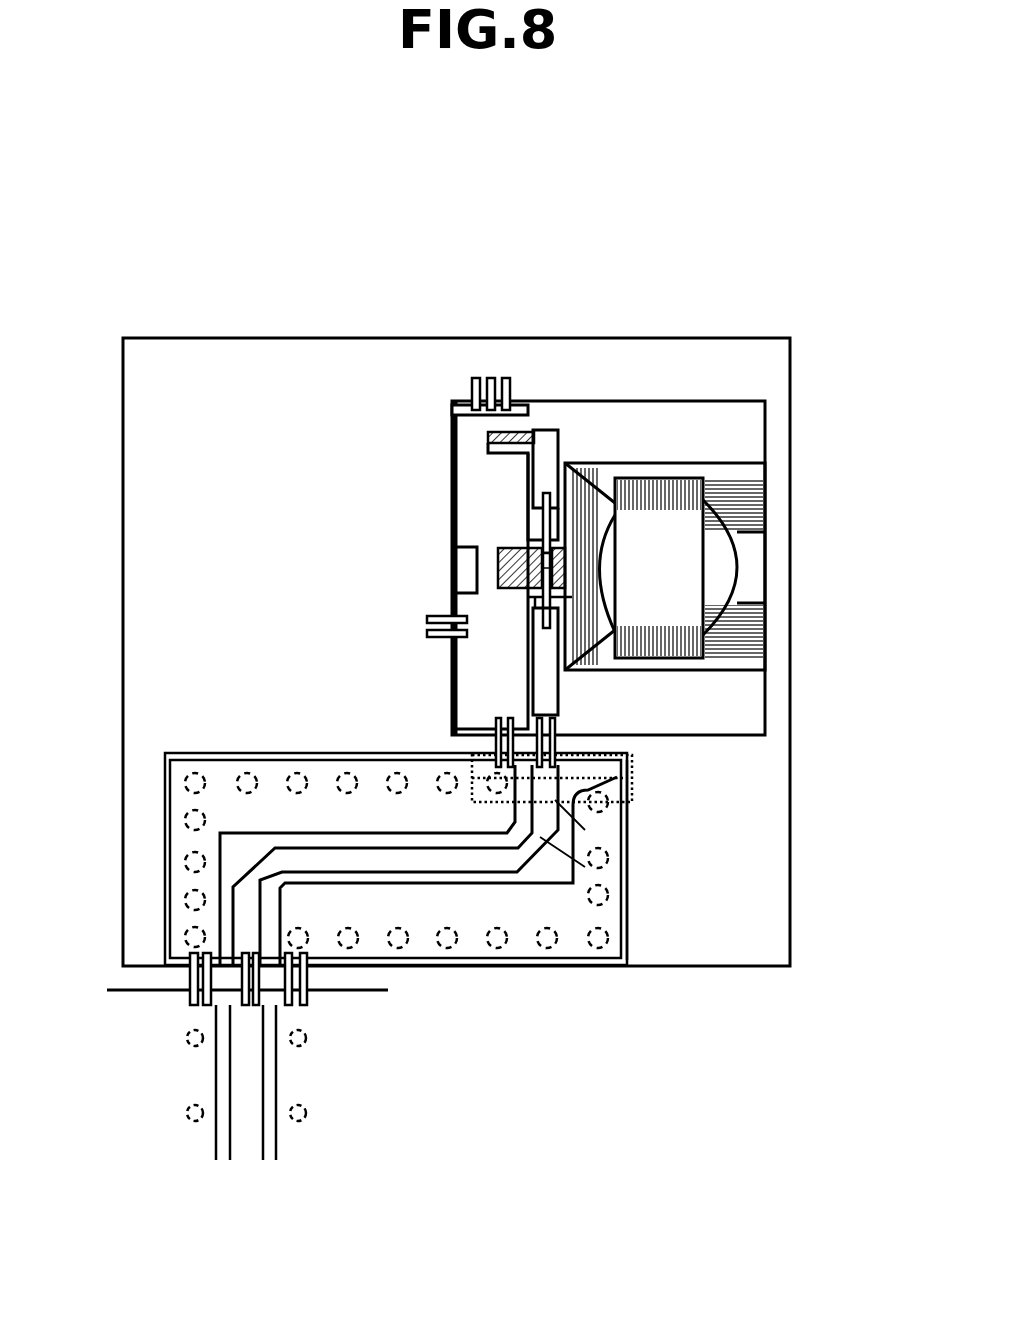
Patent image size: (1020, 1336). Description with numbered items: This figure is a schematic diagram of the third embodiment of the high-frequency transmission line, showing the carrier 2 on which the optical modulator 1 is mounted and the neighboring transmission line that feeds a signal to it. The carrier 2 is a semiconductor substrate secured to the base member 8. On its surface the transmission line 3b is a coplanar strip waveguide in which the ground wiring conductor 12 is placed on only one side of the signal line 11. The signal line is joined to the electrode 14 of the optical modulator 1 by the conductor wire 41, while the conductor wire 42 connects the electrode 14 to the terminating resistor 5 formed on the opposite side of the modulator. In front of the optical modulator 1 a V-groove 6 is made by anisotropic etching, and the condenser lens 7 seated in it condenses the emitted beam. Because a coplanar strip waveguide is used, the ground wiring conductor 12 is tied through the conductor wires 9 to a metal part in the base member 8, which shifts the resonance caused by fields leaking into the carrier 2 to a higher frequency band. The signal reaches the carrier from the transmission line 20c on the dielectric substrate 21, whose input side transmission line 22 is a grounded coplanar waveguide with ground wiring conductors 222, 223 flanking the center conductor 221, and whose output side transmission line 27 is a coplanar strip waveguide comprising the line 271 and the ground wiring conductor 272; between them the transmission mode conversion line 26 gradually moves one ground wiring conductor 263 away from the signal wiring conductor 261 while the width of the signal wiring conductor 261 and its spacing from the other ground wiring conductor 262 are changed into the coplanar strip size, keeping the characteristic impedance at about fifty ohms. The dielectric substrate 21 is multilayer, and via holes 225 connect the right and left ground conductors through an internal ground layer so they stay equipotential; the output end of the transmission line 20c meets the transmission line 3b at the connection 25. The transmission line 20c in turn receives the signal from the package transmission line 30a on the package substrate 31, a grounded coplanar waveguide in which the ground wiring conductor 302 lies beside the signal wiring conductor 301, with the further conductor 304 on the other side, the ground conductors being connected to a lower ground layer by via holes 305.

The optical modulator 1 is at (543, 568).
The carrier 2 is at (648, 423).
The transmission line 3b is at (439, 663).
The terminating resistor 5 is at (533, 430).
The V-groove 6 is at (757, 543).
The condenser lens 7 is at (688, 490).
The base member 8 is at (190, 555).
The conductor wire 9 is at (440, 617).
The signal line 11 is at (540, 655).
The ground wiring conductor 12 is at (502, 700).
The electrode 14 is at (512, 545).
The conductor wire 41 is at (522, 605).
The conductor wire 42 is at (540, 505).
The transmission line 20c is at (417, 860).
The dielectric substrate 21 is at (627, 920).
The input side transmission line 22 is at (340, 692).
The wiring line 221 is at (318, 860).
The ground wiring conductor 222 is at (322, 818).
The ground wiring conductor 223 is at (310, 907).
The via holes 225 is at (187, 818).
The connection pin 25 is at (493, 748).
The transmission mode conversion line 26 is at (633, 795).
The output side transmission line 27 is at (633, 767).
The signal wiring conductor 261 is at (555, 800).
The ground wiring conductor 262 is at (540, 837).
The ground wiring conductor 263 is at (608, 800).
The terminal pin 271 is at (541, 762).
The ground wiring conductor 272 is at (554, 762).
The package transmission line 30a is at (324, 1117).
The signal wiring conductor 301 is at (243, 1132).
The ground wiring conductor 302 is at (197, 1132).
The lead 304 is at (290, 1132).
The via holes 305 is at (324, 1091).
The package substrate 31 is at (140, 988).